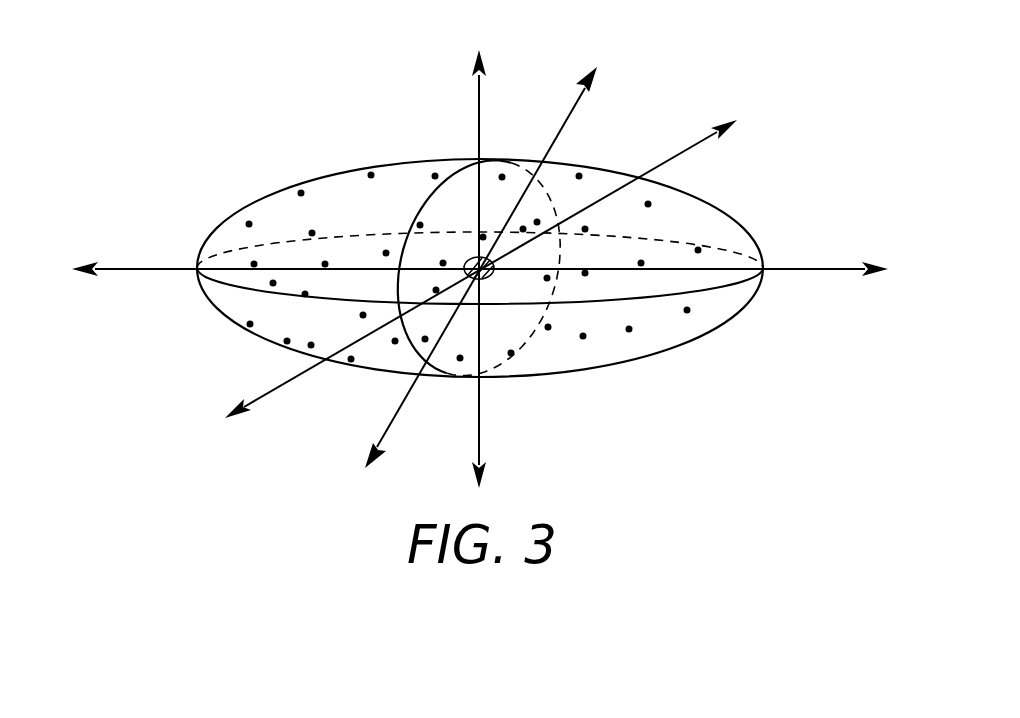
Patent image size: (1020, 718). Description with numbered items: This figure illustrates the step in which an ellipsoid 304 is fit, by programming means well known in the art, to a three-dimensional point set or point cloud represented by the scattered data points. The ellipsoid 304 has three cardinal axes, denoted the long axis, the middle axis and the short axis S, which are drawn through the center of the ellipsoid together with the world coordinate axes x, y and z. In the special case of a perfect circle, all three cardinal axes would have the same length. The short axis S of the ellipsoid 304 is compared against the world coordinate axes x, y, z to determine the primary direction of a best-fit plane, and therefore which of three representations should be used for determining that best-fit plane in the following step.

The ellipsoid 304 is at (570, 160).
The world coordinate x axis x is at (476, 270).
The world coordinate y axis y is at (482, 269).
The world coordinate z axis z is at (478, 250).
The short axis S is at (490, 247).